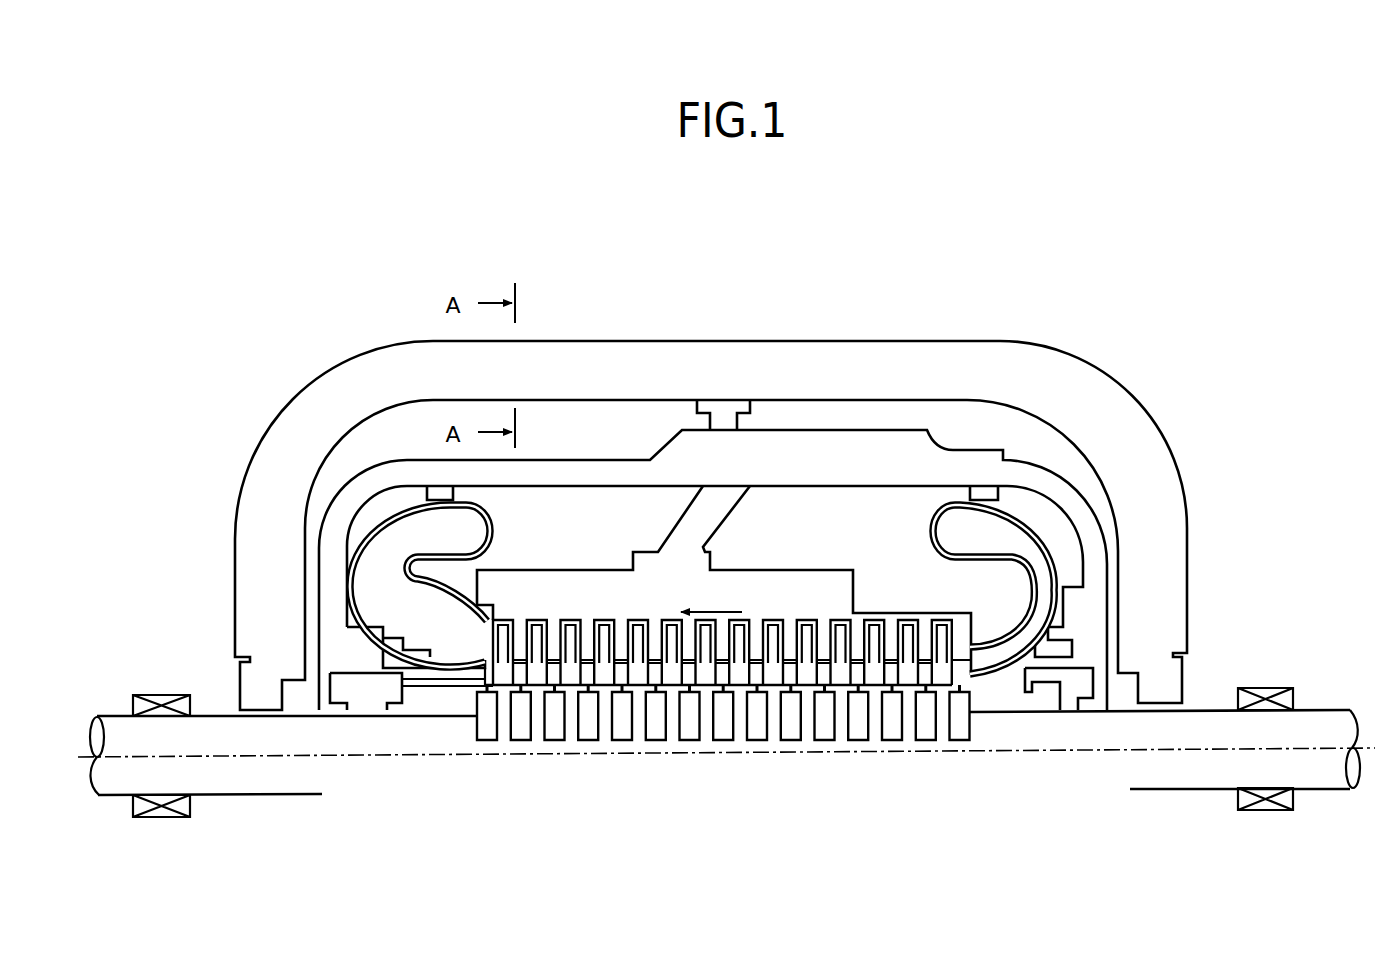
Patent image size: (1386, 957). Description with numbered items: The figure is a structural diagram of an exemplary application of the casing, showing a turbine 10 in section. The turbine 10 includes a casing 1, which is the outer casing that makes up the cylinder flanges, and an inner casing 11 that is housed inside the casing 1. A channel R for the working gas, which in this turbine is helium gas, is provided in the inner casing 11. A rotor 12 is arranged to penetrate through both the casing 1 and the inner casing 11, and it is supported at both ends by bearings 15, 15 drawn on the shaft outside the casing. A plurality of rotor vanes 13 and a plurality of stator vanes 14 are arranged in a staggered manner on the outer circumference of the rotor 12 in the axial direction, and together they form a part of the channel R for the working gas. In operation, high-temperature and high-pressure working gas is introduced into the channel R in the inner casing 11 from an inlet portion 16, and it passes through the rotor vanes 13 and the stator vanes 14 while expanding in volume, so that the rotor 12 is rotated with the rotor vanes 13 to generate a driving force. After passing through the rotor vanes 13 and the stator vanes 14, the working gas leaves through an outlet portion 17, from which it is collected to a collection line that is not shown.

The casing 1 is at (318, 378).
The turbine 10 is at (1099, 271).
The inner casing 11 is at (958, 448).
The rotor 12 is at (1210, 708).
The rotor vanes 13 is at (500, 645).
The stator vanes 14 is at (519, 626).
The bearings 15 is at (1278, 688).
The inlet portion 16 is at (943, 532).
The outlet portion 17 is at (478, 530).
The channel R is at (888, 648).